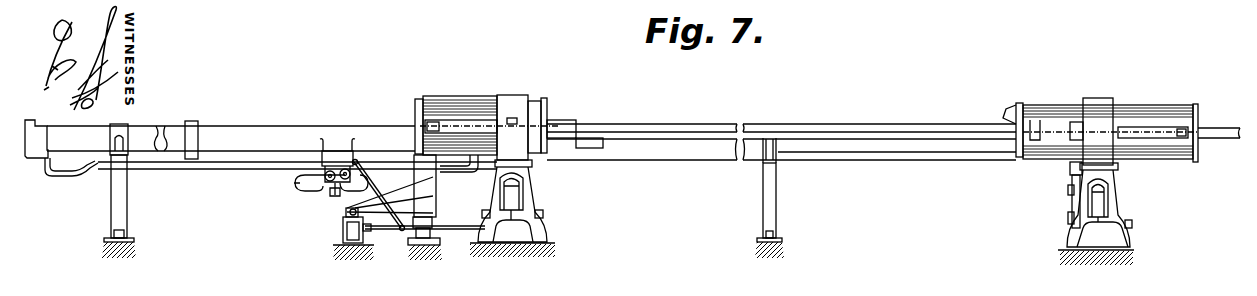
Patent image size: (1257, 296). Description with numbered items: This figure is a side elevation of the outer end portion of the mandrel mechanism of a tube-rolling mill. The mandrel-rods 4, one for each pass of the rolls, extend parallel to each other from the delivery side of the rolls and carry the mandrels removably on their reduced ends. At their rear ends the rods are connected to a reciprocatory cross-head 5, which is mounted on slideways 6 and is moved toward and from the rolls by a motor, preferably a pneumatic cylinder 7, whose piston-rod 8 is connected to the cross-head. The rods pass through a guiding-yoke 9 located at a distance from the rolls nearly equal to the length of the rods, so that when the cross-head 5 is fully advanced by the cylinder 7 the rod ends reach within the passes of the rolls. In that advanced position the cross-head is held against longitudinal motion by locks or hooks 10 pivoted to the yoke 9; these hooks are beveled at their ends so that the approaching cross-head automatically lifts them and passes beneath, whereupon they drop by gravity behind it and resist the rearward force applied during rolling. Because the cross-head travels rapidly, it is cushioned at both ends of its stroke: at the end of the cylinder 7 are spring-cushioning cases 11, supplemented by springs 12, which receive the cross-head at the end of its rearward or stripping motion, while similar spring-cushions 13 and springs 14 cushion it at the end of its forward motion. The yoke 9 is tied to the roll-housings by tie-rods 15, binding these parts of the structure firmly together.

The mandrel-rods 4 is at (690, 125).
The reciprocatory cross-head 5 is at (578, 122).
The slideways 6 is at (630, 147).
The pneumatic cylinder 7 is at (306, 131).
The piston-rod 8 is at (528, 161).
The guiding-yoke 9 is at (1097, 101).
The locks or hooks 10 is at (1008, 111).
The spring-cushioning cases 11 is at (487, 119).
The springs 12 is at (548, 115).
The spring-cushions 13 is at (1148, 100).
The springs 14 is at (1070, 125).
The tie-rods 15 is at (1212, 132).